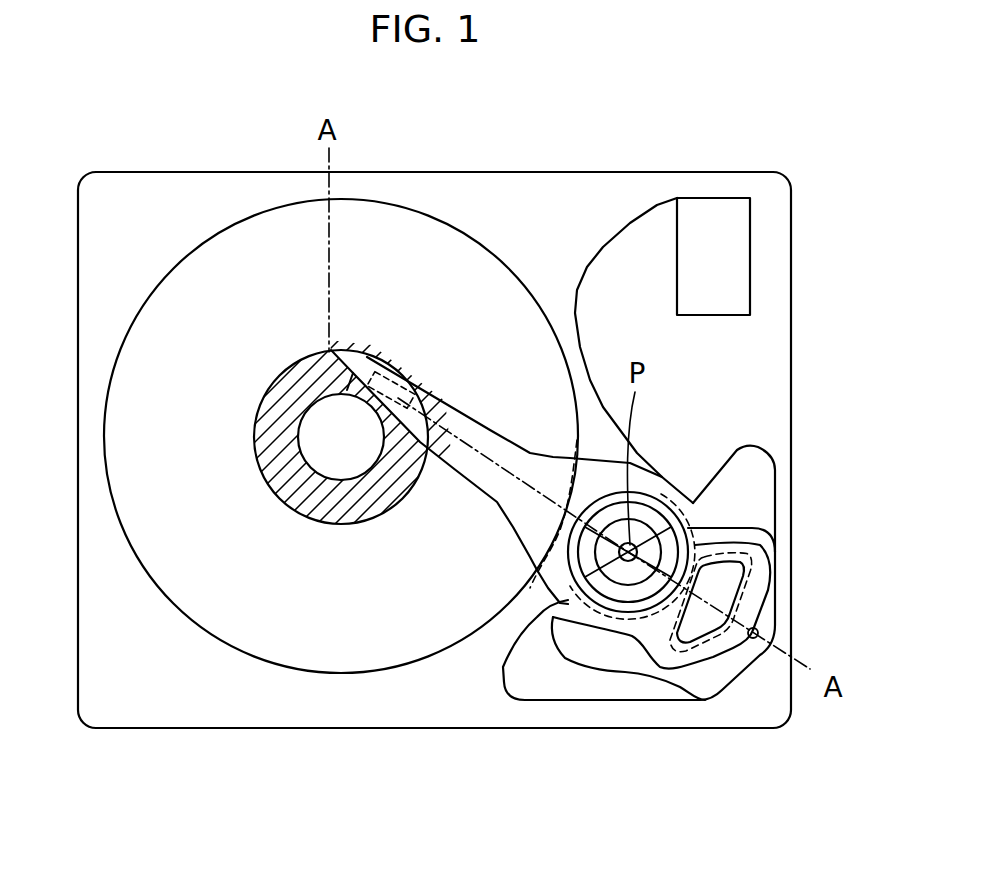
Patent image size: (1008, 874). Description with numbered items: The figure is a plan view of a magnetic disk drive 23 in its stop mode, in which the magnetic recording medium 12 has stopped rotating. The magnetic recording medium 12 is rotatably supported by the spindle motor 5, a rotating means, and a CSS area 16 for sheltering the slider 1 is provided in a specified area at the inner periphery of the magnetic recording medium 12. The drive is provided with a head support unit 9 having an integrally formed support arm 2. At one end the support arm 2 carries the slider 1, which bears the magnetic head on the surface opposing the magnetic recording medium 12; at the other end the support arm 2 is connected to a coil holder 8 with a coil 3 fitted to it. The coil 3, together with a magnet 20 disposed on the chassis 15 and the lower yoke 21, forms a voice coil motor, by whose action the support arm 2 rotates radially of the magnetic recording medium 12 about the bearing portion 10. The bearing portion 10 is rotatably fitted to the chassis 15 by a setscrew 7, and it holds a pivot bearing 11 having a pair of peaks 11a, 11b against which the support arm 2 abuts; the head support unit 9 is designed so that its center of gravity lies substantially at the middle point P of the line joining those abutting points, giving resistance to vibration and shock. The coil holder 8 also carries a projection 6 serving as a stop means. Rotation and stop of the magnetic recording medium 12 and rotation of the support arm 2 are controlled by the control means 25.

The slider 1 is at (395, 370).
The support arm 2 is at (458, 408).
The coil 3 is at (760, 580).
The spindle motor 5 is at (317, 443).
The projection 6 is at (758, 633).
The setscrew 7 is at (548, 598).
The coil holder 8 is at (775, 545).
The head support unit 9 is at (560, 600).
The bearing portion 10 is at (740, 506).
The pivot bearing 11 is at (665, 480).
The peak 11a is at (600, 614).
The peak 11b is at (690, 490).
The magnetic recording medium 12 is at (225, 620).
The chassis 15 is at (243, 730).
The CSS area 16 is at (343, 517).
The magnet 20 is at (632, 660).
The lower yoke 21 is at (750, 463).
The magnetic disk drive 23 is at (672, 116).
The control means 25 is at (732, 236).